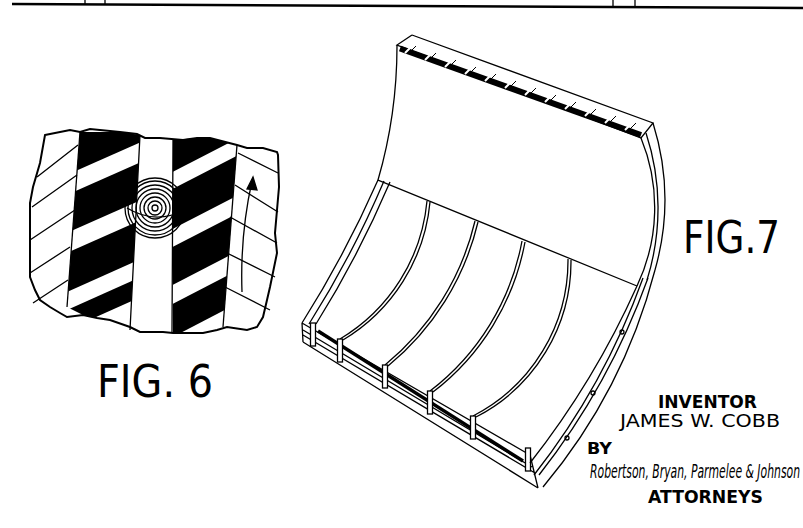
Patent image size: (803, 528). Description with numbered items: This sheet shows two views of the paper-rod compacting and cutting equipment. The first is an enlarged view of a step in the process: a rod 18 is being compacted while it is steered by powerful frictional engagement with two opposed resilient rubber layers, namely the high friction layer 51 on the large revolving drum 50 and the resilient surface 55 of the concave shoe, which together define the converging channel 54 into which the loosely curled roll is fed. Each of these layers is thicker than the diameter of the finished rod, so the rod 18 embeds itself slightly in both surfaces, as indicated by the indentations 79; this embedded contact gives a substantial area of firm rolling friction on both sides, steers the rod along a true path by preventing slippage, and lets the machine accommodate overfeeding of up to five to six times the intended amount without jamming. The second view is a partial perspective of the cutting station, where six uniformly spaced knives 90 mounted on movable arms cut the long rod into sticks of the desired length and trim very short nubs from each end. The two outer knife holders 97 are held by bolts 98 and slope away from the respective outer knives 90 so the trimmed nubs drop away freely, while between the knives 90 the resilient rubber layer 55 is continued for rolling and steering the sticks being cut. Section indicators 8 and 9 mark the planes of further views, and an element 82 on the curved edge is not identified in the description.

In FIG. 6, the rod 18 is at (155, 177).
In FIG. 6, the revolving drum 50 is at (257, 217).
In FIG. 6, the resilient high friction layer 51 is at (207, 163).
In FIG. 6, the converging channel 54 is at (157, 310).
In FIG. 6, the resilient surface 55 is at (97, 300).
In FIG. 7, the resilient surface 55 is at (647, 147).
In FIG. 6, the indentations 79 is at (145, 220).
In FIG. 7, the flange 82 is at (662, 185).
In FIG. 7, the knives 90 is at (437, 308).
In FIG. 7, the outer knife holders 97 is at (625, 323).
In FIG. 7, the bolts 98 is at (595, 392).
In FIG. 7, the section line 8- 8 is at (342, 317).
In FIG. 7, the section line 9- 9 is at (593, 212).